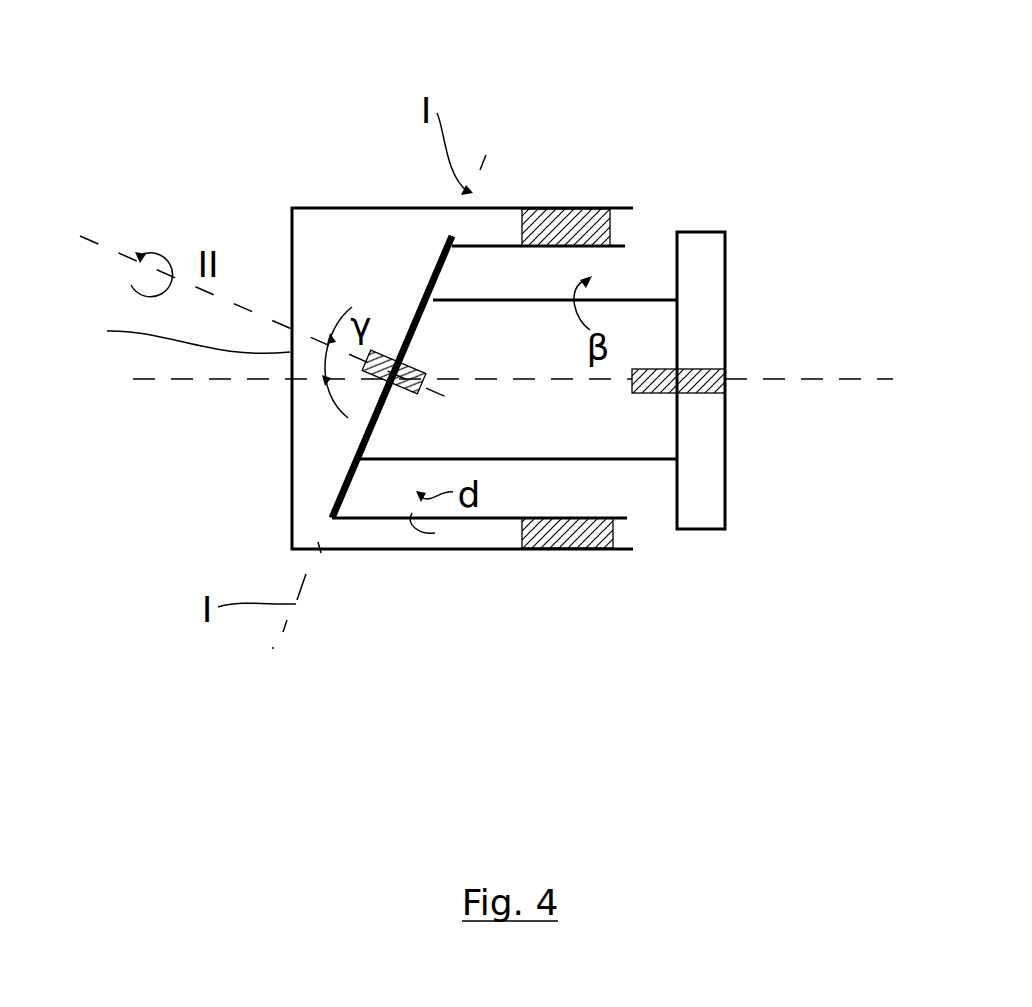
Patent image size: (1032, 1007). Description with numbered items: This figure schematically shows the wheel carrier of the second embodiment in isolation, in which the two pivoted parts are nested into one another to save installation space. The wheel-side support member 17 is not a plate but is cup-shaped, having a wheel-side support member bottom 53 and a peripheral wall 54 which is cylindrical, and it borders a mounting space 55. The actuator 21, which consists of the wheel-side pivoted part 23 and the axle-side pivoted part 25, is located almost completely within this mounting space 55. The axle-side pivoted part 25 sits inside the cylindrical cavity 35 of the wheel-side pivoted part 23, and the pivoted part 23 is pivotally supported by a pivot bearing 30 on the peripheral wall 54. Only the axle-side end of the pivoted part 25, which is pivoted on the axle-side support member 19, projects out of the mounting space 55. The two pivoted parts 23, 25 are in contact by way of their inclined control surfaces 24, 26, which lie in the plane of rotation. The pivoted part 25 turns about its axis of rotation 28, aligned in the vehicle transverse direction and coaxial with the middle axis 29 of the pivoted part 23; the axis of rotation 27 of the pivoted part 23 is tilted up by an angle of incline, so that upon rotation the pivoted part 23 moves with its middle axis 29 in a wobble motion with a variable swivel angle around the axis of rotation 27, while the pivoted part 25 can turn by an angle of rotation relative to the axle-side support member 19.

The wheel-side support member 17 is at (292, 256).
The axle-side support member 19 is at (727, 280).
The actuator 21 is at (458, 522).
The wheel-side pivoted part 23 is at (500, 240).
The inclined control surface 24 is at (440, 258).
The axle-side pivoted part 25 is at (646, 462).
The inclined control surface 26 is at (430, 318).
The axis of rotation 27 is at (127, 253).
The axis of rotation 28 is at (765, 383).
The middle axis 29 is at (258, 381).
The pivot bearing 30 is at (595, 207).
The cylindrical cavity 35 is at (543, 273).
The wheel-side support member bottom 53 is at (173, 331).
The peripheral wall 54 is at (568, 549).
The mounting space 55 is at (318, 288).